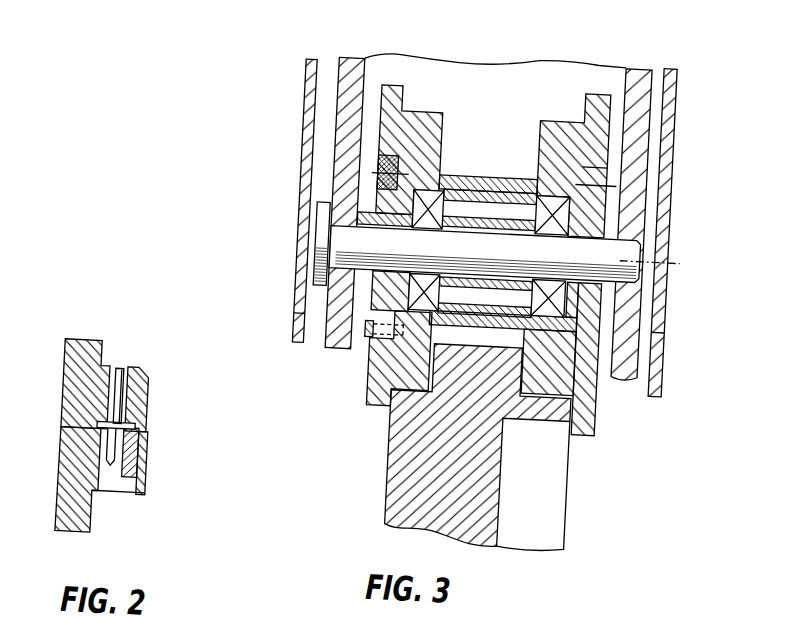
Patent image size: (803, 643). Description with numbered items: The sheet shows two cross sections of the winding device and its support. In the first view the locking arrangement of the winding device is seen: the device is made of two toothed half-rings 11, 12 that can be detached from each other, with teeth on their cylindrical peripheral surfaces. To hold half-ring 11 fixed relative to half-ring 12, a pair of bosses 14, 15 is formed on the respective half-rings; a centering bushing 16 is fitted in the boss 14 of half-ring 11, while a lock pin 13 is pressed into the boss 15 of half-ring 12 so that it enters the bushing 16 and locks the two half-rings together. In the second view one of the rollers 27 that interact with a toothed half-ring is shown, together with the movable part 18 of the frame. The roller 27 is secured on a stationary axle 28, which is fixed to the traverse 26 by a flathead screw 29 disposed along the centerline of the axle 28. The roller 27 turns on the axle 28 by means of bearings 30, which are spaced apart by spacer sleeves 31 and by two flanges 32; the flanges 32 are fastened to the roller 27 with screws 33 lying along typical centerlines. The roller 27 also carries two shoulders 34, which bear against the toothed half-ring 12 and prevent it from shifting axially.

In FIG. 2, the toothed half-ring 11 is at (75, 514).
In FIG. 2, the toothed half-ring 12 is at (72, 396).
In FIG. 3, the toothed half-ring 12 is at (406, 478).
In FIG. 2, the lock pin 13 is at (124, 382).
In FIG. 2, the boss 14 is at (154, 496).
In FIG. 2, the boss 15 is at (149, 392).
In FIG. 2, the centering bushing 16 is at (143, 461).
In FIG. 3, the movable part of the frame 18 is at (300, 155).
In FIG. 3, the traverse 26 is at (338, 61).
In FIG. 3, the roller 27 is at (421, 117).
In FIG. 3, the stationary axle 28 is at (320, 247).
In FIG. 3, the flathead screw 29 is at (320, 308).
In FIG. 3, the bearing 30 is at (545, 188).
In FIG. 3, the spacer sleeve 31 is at (575, 240).
In FIG. 3, the flange 32 is at (386, 159).
In FIG. 3, the screw 33 is at (369, 325).
In FIG. 3, the shoulder 34 is at (379, 404).